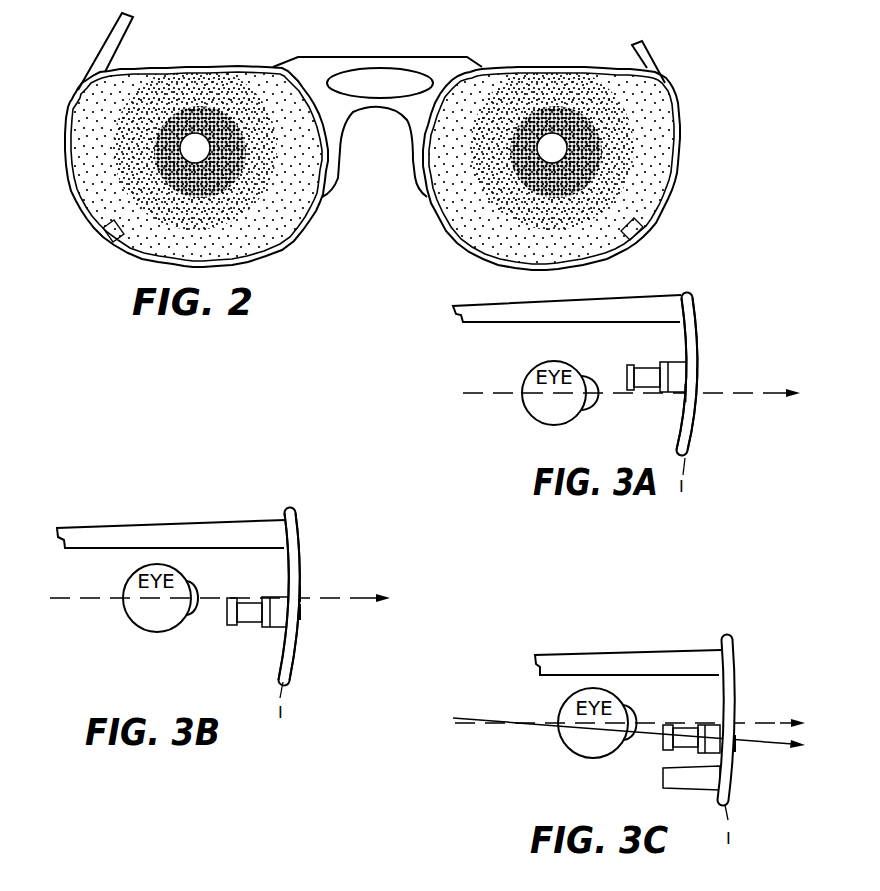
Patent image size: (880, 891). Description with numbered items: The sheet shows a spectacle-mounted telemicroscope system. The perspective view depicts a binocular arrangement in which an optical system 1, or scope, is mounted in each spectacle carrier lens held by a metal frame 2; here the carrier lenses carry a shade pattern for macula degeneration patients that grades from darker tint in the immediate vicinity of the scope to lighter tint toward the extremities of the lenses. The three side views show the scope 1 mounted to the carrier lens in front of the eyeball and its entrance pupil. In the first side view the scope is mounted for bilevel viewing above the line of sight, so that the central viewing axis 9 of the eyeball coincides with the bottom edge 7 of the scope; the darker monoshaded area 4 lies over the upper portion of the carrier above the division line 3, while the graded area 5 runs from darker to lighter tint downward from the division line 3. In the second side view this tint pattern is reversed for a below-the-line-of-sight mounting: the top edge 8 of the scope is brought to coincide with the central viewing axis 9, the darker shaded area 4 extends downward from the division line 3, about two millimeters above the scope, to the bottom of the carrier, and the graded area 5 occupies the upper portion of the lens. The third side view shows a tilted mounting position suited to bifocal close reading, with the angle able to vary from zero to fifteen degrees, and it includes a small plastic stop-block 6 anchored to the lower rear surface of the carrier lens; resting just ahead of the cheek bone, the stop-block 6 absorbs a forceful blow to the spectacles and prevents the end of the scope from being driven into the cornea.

In FIG. 2, the optical system 1 is at (207, 143).
In FIG. 3A, the optical system 1 is at (697, 377).
In FIG. 3B, the optical system 1 is at (302, 612).
In FIG. 3C, the optical system 1 is at (734, 745).
In FIG. 3A, the metal frame 2 is at (690, 293).
In FIG. 3B, the metal frame 2 is at (292, 512).
In FIG. 3A, the division line 3 is at (693, 390).
In FIG. 3B, the division line 3 is at (302, 593).
In FIG. 3A, the darker monoshaded area 4 is at (697, 322).
In FIG. 3B, the darker monoshaded area 4 is at (298, 647).
In FIG. 3A, the graded carrier area 5 is at (693, 423).
In FIG. 3B, the graded carrier area 5 is at (302, 553).
In FIG. 3C, the stop-block 6 is at (663, 781).
In FIG. 3A, the bottom edge of the scope 7 is at (660, 392).
In FIG. 3B, the bottom edge of the scope 7 is at (262, 627).
In FIG. 3A, the top edge of the scope 8 is at (667, 360).
In FIG. 3B, the top edge of the scope 8 is at (267, 597).
In FIG. 3A, the central viewing axis 9 is at (758, 385).
In FIG. 3B, the central viewing axis 9 is at (355, 593).
In FIG. 3C, the central viewing axis 9 is at (768, 720).